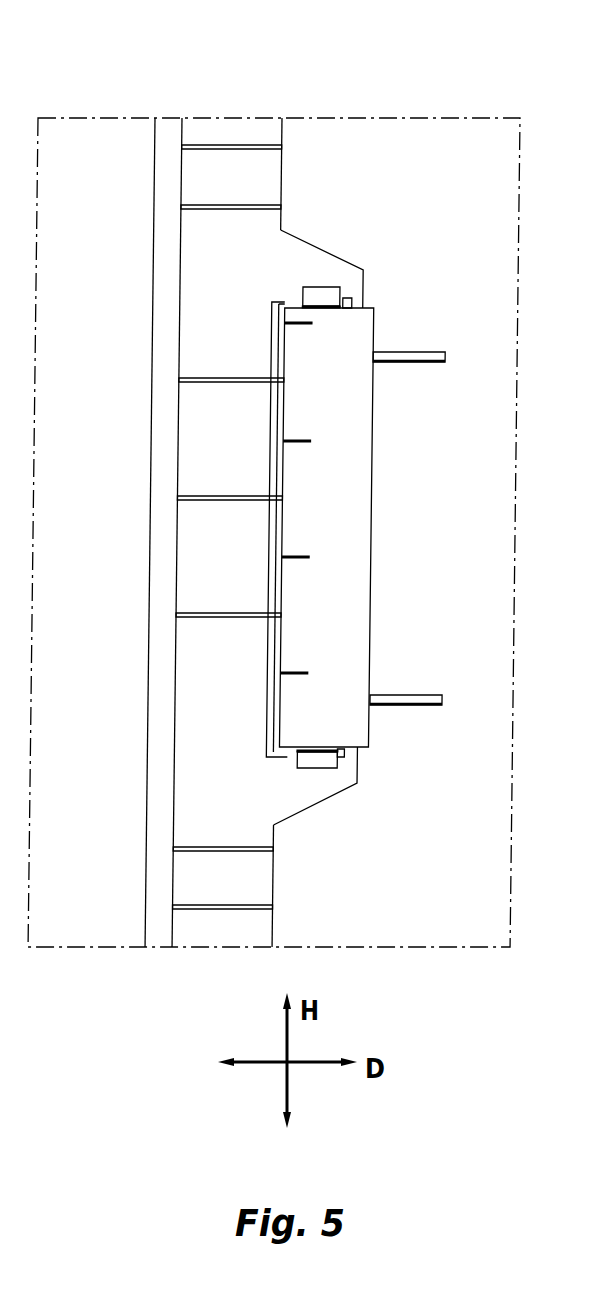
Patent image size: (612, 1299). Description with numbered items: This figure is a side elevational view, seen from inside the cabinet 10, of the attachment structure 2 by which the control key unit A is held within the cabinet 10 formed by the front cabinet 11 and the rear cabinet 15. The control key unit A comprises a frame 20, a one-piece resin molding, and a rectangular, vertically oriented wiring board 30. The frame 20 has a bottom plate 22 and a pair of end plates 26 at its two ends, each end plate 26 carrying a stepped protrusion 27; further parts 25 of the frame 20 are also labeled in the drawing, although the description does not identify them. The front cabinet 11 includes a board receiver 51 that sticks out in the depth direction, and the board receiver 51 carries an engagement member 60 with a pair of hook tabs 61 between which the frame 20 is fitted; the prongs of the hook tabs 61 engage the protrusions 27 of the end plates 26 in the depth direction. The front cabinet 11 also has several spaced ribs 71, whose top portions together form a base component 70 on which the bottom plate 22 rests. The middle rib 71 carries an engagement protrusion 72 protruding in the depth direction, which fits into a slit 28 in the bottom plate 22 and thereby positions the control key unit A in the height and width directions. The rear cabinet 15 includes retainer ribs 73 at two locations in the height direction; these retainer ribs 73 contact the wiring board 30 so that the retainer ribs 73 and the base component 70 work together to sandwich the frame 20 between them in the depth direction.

The attachment structure 2 is at (400, 830).
The cabinet 10 is at (232, 476).
The front cabinet 11 is at (170, 120).
The rear cabinet 15 is at (198, 47).
The frame 20 is at (215, 587).
The bottom plate 22 is at (268, 449).
The fastener 25 is at (303, 326).
The end plates 26 is at (345, 302).
The protrusion 27 is at (285, 300).
The slit 28 is at (268, 530).
The wiring board 30 is at (380, 520).
The board receiver 51 is at (345, 272).
The engagement member 60 is at (325, 287).
The hook tabs 61 is at (334, 532).
The base component 70 is at (280, 383).
The ribs 71 is at (208, 379).
The engagement protrusion 72 is at (278, 497).
The retainer ribs 73 is at (424, 363).
The control key unit A is at (411, 326).